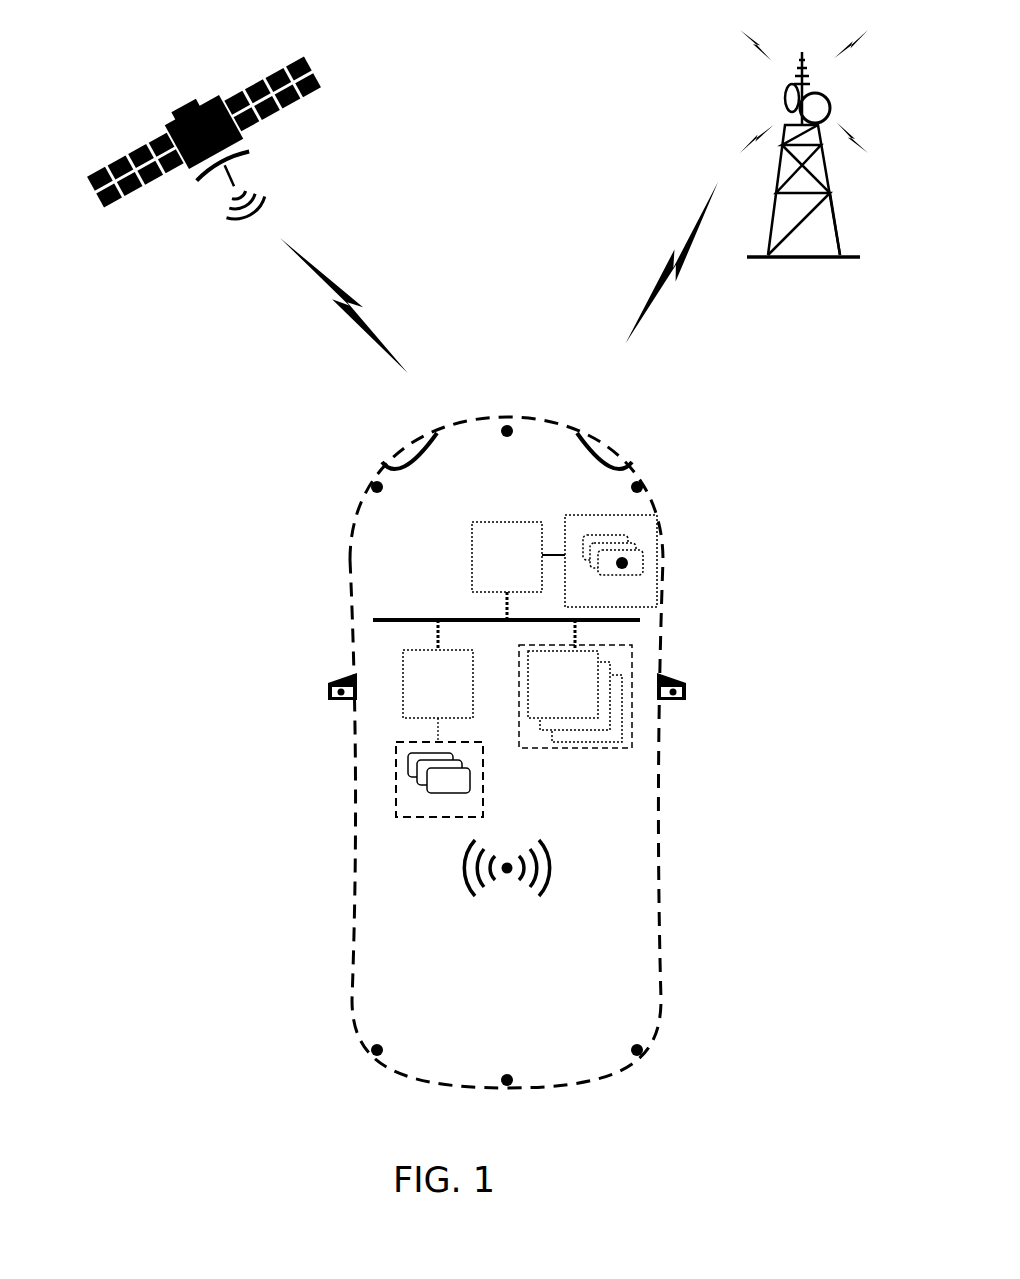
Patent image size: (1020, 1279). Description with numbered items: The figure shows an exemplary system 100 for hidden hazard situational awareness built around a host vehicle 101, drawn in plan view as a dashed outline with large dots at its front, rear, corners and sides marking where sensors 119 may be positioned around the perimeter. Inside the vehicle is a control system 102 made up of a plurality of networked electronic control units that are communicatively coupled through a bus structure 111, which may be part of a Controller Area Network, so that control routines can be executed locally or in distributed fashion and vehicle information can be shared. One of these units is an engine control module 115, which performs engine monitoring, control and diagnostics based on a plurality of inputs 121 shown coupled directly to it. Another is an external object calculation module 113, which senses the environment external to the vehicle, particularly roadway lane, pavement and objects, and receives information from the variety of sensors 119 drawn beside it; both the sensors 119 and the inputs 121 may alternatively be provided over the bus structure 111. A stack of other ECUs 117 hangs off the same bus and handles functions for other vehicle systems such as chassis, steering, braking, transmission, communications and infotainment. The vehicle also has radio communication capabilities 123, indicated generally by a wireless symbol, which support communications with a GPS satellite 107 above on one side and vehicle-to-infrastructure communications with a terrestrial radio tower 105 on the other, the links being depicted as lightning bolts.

The system for hidden hazard situational awareness 100 is at (553, 72).
The host vehicle 101 is at (663, 830).
The control system 102 is at (481, 490).
The terrestrial radio tower 105 is at (876, 221).
The GPS satellite 107 is at (142, 83).
The bus structure 111 is at (439, 583).
The external object calculation module (EOCM) 113 is at (472, 548).
The engine control module (ECM) 115 is at (403, 672).
The other ECUs 117 is at (572, 748).
The sensors 119 is at (590, 516).
The inputs 121 is at (483, 812).
The radio communication capabilities 123 is at (575, 866).